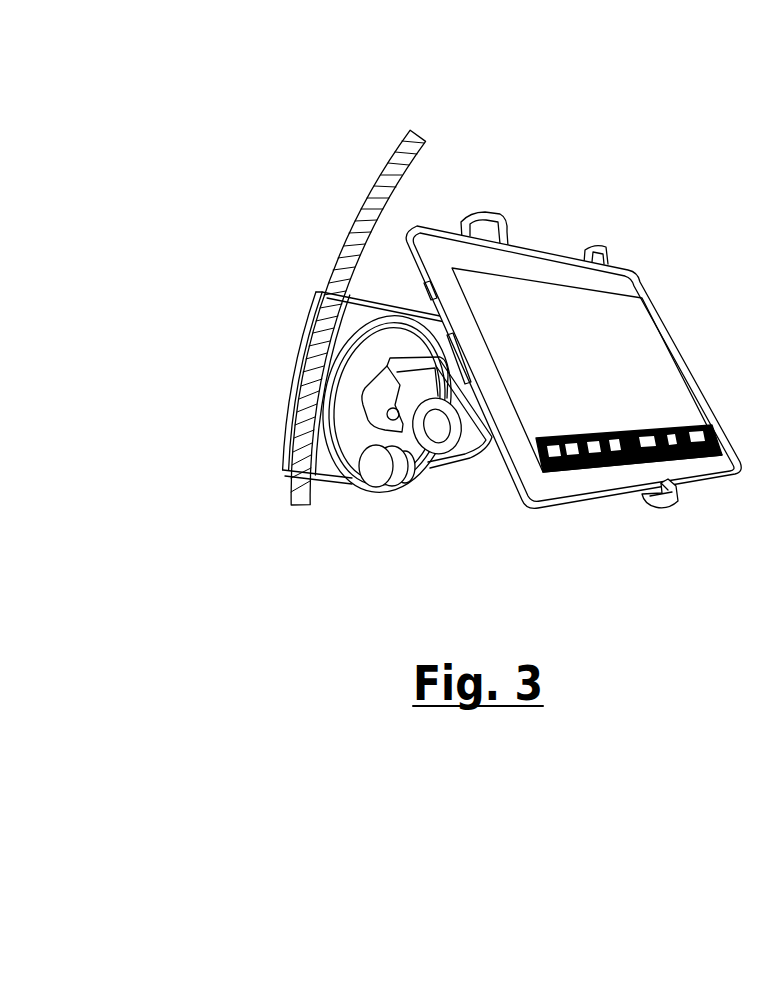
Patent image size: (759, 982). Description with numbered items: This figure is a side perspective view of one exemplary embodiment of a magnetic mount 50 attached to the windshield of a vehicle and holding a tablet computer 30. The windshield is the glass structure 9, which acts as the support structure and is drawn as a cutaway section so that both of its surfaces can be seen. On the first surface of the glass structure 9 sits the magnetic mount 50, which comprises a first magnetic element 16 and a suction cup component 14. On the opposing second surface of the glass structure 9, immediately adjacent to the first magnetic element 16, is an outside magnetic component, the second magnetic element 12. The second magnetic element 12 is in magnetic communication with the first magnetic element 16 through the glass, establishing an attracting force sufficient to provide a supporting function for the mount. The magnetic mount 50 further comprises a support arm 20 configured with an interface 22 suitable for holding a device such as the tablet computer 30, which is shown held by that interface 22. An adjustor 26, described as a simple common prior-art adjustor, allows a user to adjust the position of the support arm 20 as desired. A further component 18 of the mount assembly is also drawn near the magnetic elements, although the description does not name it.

The glass structure 9 is at (380, 188).
The second magnetic element 12 is at (310, 357).
The suction cup component 14 is at (325, 408).
The first magnetic element 16 is at (362, 420).
The clamp body 18 is at (403, 360).
The support arm 20 is at (448, 470).
The interface 22 is at (645, 503).
The adjustor 26 is at (378, 488).
The tablet computer 30 is at (553, 248).
The magnetic mount 50 is at (334, 502).